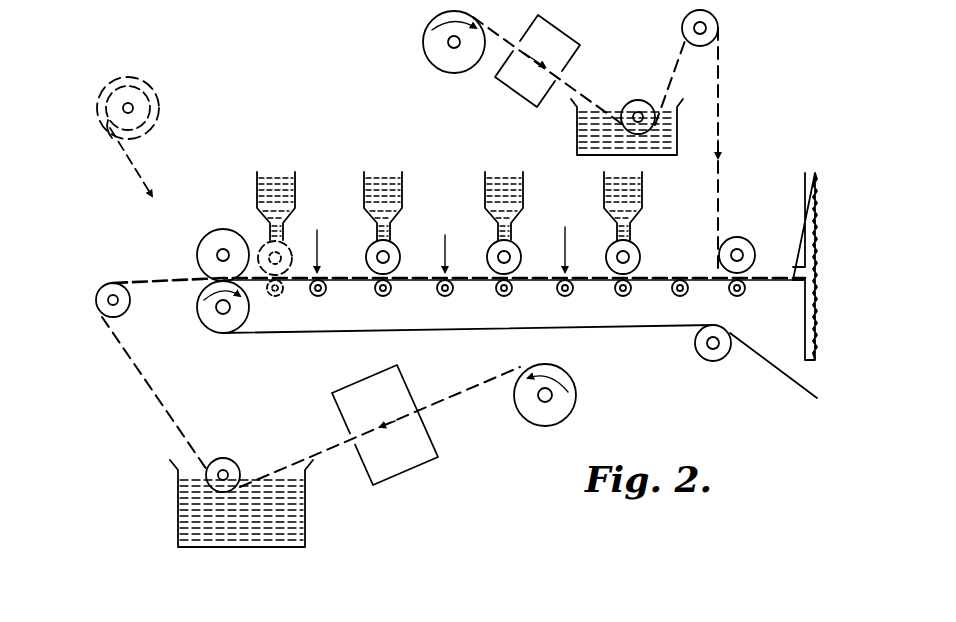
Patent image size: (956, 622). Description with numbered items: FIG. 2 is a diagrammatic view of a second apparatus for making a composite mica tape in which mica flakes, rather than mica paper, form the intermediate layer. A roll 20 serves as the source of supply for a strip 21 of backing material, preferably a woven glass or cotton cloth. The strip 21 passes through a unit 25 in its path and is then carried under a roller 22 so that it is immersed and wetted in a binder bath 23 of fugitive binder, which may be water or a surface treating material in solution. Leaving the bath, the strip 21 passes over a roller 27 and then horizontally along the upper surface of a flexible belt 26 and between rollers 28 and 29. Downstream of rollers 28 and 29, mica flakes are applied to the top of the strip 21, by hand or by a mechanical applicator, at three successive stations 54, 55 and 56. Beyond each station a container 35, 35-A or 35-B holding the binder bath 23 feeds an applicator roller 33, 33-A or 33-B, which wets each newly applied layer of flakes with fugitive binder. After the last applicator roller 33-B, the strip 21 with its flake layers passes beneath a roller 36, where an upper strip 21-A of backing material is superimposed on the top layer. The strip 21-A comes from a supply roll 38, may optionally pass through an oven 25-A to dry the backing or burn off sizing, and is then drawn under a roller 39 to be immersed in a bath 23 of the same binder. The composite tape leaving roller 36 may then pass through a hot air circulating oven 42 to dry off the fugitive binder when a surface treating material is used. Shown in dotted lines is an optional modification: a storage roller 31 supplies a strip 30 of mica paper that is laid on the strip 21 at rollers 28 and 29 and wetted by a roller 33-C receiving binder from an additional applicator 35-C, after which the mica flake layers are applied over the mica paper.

The roll 20 is at (524, 417).
The strip of backing material 21 is at (490, 366).
The upper strip of backing material 21-A is at (719, 92).
The roller 22 is at (226, 458).
The bath 23 is at (668, 140).
The dryer / treating unit 25 is at (349, 387).
The oven 25-A is at (574, 60).
The flexible belt 26 is at (756, 363).
The roller 27 is at (96, 297).
The roller 28 is at (218, 237).
The roller 29 is at (204, 318).
The strip of mica paper 30 is at (130, 162).
The storage roller 31 is at (158, 105).
The applicator roller 33 is at (399, 262).
The applicator roller 33-A is at (517, 245).
The last applicator roller 33-B is at (636, 247).
The roller 33-C is at (288, 248).
The container 35 is at (402, 180).
The container 35-A is at (524, 181).
The container 35-B is at (642, 212).
The additional applicator 35-C is at (297, 176).
The roller 36 is at (775, 218).
The roll 38 is at (424, 45).
The roller 39 is at (633, 101).
The hot air circulating oven 42 is at (804, 178).
The mica flake applicating station 54 is at (318, 249).
The mica flake applicating station 55 is at (446, 240).
The mica flake applicating station 56 is at (566, 250).